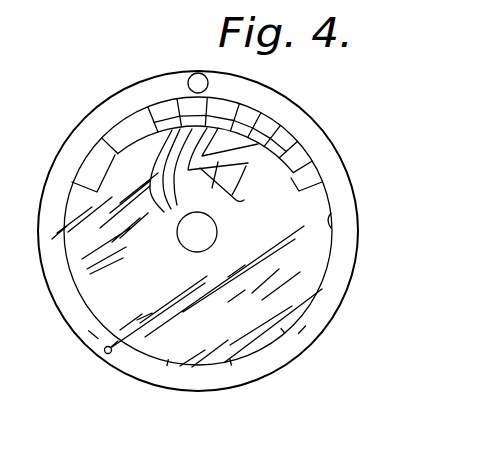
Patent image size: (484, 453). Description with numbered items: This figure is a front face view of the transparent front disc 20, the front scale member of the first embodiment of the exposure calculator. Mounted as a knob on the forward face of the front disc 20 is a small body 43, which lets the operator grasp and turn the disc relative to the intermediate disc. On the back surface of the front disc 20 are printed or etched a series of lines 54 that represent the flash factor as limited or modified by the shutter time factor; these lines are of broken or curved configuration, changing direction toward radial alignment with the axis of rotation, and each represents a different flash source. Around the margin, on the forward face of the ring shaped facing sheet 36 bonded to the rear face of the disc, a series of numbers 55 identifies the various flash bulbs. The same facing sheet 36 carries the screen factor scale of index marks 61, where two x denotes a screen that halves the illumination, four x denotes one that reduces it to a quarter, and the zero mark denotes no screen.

The front disc 20 is at (341, 146).
The ring shaped facing sheet 36 is at (333, 226).
The small body 43 is at (188, 82).
The lines 54 is at (210, 171).
The series of numbers 55 is at (262, 114).
The index marks 61 is at (153, 367).